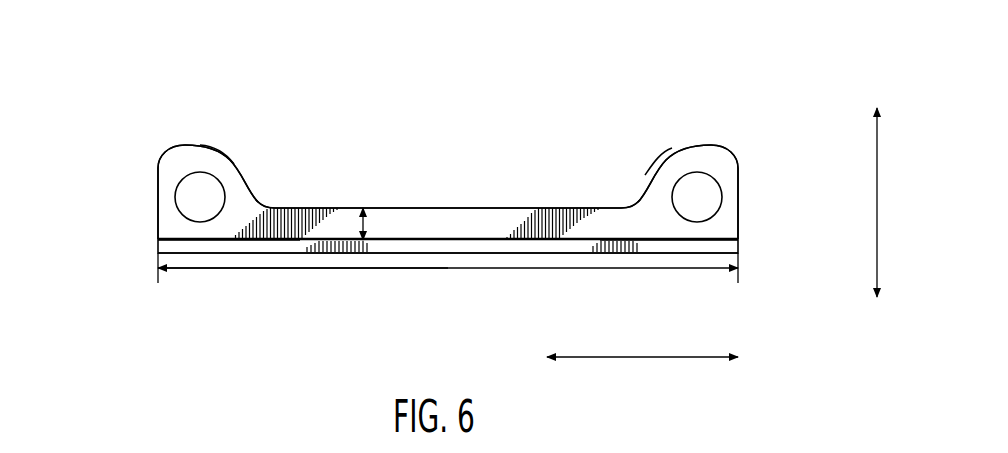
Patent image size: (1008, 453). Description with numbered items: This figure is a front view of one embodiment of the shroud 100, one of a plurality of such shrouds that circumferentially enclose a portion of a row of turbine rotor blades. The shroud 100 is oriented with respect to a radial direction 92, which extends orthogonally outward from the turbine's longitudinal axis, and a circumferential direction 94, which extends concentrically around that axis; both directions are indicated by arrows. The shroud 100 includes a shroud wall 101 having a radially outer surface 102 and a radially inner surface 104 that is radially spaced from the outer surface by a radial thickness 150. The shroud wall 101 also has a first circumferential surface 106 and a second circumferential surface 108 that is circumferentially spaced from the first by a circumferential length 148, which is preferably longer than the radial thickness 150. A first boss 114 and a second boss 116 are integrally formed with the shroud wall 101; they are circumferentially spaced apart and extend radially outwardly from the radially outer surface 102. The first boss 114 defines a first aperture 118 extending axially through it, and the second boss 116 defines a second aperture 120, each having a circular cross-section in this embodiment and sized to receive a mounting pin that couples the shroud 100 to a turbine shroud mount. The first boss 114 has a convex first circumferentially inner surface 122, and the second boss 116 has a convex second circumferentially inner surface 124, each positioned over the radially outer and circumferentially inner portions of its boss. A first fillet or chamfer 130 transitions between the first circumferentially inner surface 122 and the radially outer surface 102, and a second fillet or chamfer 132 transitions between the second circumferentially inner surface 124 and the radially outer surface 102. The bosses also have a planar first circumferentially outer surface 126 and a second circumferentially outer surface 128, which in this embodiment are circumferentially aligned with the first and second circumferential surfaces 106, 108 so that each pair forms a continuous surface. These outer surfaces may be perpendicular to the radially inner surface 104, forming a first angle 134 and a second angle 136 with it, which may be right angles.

The shroud 100 is at (125, 102).
The shroud wall 101 is at (502, 228).
The radially outer surface 102 is at (420, 208).
The radially inner surface 104 is at (615, 253).
The first circumferential surface 106 is at (158, 240).
The second circumferential surface 108 is at (740, 238).
The first boss 114 is at (218, 127).
The second boss 116 is at (668, 137).
The first aperture 118 is at (199, 196).
The second aperture 120 is at (697, 192).
The first circumferentially inner surface 122 is at (238, 162).
The second circumferentially inner surface 124 is at (653, 162).
The first circumferentially outer surface 126 is at (158, 212).
The second circumferentially outer surface 128 is at (740, 196).
The first fillet or chamfer 130 is at (268, 204).
The second fillet or chamfer 132 is at (627, 207).
The first angle 134 is at (158, 253).
The second angle 136 is at (740, 258).
The circumferential length 148 is at (237, 271).
The radial thickness 150 is at (363, 228).
The radial direction 92 is at (877, 165).
The circumferential direction 94 is at (632, 358).